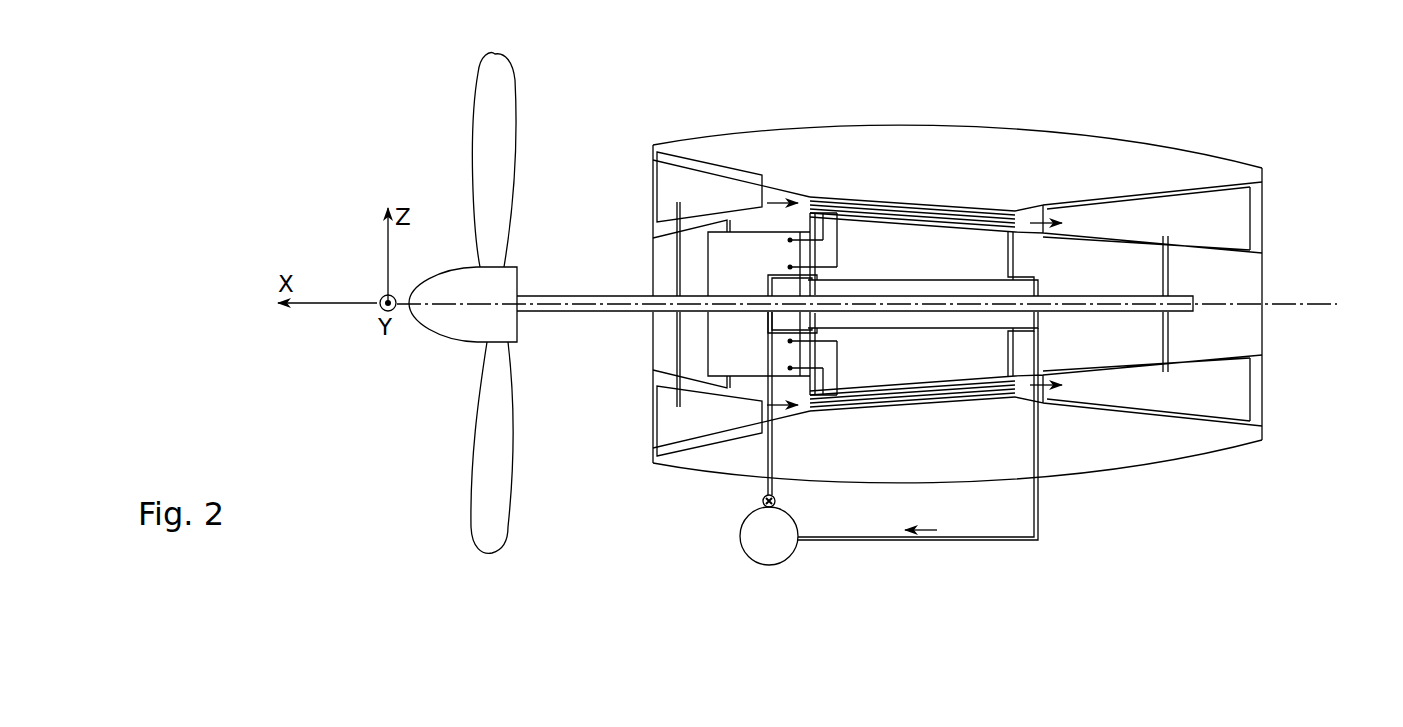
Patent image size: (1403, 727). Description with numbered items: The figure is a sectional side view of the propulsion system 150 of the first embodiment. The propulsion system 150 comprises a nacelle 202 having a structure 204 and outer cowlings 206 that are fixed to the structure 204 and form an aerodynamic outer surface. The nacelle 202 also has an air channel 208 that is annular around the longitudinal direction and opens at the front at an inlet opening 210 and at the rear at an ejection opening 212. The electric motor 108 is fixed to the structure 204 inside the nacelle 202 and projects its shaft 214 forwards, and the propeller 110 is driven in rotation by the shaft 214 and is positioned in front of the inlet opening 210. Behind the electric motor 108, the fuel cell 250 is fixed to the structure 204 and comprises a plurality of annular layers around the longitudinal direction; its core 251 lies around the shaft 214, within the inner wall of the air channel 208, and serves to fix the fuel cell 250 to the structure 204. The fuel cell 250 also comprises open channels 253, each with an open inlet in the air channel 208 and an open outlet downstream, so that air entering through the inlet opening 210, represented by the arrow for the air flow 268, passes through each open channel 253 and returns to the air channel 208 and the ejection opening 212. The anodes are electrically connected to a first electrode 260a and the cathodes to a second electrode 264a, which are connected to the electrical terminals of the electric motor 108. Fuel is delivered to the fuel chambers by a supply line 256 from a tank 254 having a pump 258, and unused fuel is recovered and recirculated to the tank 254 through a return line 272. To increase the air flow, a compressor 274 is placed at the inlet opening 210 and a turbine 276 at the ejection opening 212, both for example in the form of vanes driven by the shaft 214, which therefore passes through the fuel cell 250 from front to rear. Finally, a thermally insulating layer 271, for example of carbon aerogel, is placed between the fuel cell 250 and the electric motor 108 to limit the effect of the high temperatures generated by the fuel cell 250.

The propeller 110 is at (492, 80).
The shaft 214 is at (527, 308).
The propulsion system 150 is at (1175, 79).
The nacelle 202 is at (1199, 126).
The outer cowlings 206 is at (1225, 437).
The ejection opening 212 is at (1262, 395).
The air channel 208 is at (700, 160).
The inlet opening 210 is at (657, 160).
The compressor 274 is at (672, 415).
The air flow 268 is at (798, 403).
The structure 204 is at (705, 236).
The electric motor 108 is at (725, 322).
The second electrode 264a is at (790, 240).
The first electrode 260a is at (790, 267).
The thermally insulating layer 271 is at (805, 372).
The open channels 253 is at (950, 208).
The core 251 is at (958, 266).
The supply line 256 is at (763, 497).
The pump 258 is at (752, 505).
The tank 254 is at (762, 548).
The return line 272 is at (1037, 540).
The fuel cell 250 is at (953, 86).
The turbine 276 is at (1213, 218).